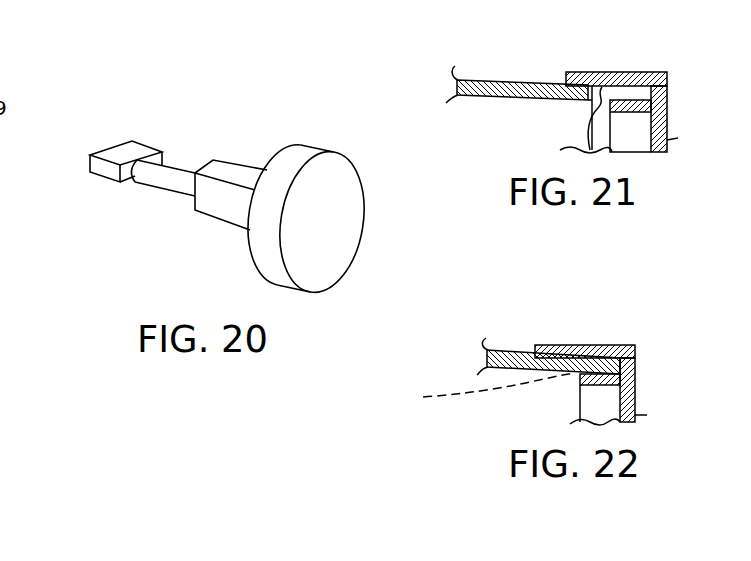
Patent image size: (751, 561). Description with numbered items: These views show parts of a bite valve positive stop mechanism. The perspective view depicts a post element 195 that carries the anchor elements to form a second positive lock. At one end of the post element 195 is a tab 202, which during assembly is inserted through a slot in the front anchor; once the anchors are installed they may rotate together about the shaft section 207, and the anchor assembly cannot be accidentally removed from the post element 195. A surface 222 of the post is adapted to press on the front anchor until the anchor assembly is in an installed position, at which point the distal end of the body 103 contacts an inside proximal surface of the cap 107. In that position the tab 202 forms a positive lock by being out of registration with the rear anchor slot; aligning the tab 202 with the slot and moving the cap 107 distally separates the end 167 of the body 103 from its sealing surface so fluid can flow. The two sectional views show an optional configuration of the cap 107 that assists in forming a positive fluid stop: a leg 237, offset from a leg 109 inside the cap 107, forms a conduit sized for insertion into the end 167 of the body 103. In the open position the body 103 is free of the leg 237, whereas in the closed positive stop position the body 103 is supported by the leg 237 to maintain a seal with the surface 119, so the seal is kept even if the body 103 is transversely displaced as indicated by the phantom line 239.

In FIG. 20, the post element 195 is at (113, 82).
In FIG. 20, the tab 202 is at (117, 152).
In FIG. 20, the shaft section 207 is at (172, 166).
In FIG. 20, the surface 222 is at (214, 160).
In FIG. 20, the cap 107 is at (337, 201).
In FIG. 21, the cap 107 is at (663, 101).
In FIG. 22, the cap 107 is at (637, 366).
In FIG. 20, the leg 109 is at (308, 157).
In FIG. 21, the leg 109 is at (597, 82).
In FIG. 21, the body 103 is at (503, 84).
In FIG. 22, the body 103 is at (507, 350).
In FIG. 21, the end 167 is at (590, 107).
In FIG. 21, the surface 119 is at (586, 127).
In FIG. 21, the leg 237 is at (617, 110).
In FIG. 22, the leg 237 is at (590, 402).
In FIG. 22, the phantom line 239 is at (471, 397).